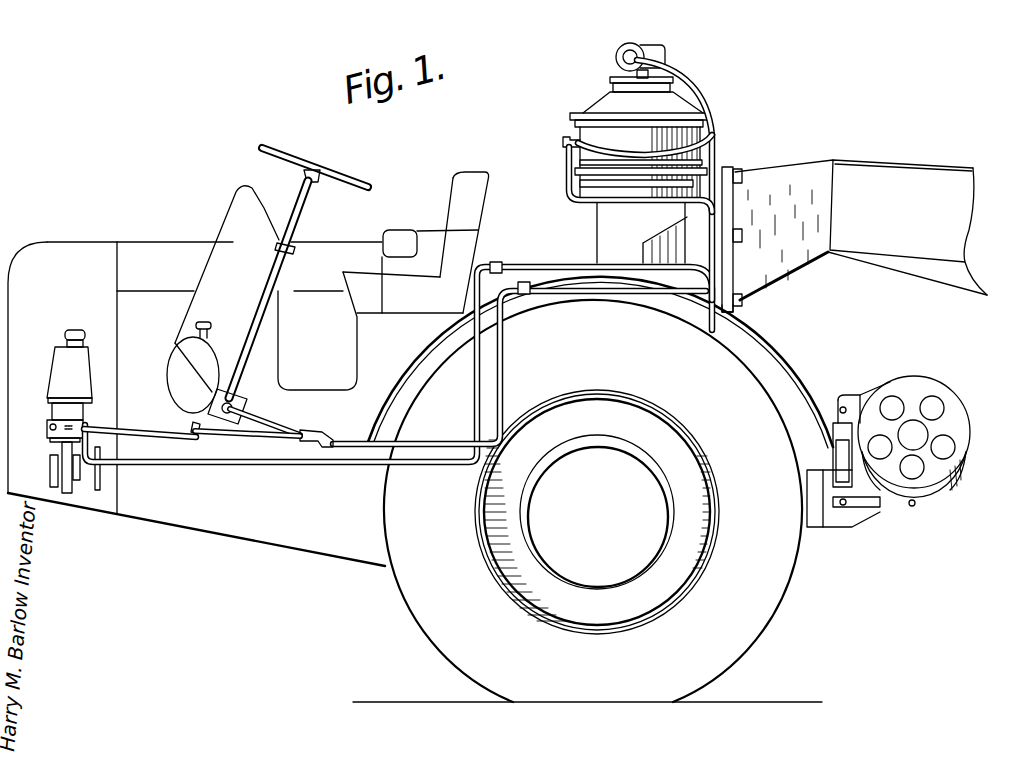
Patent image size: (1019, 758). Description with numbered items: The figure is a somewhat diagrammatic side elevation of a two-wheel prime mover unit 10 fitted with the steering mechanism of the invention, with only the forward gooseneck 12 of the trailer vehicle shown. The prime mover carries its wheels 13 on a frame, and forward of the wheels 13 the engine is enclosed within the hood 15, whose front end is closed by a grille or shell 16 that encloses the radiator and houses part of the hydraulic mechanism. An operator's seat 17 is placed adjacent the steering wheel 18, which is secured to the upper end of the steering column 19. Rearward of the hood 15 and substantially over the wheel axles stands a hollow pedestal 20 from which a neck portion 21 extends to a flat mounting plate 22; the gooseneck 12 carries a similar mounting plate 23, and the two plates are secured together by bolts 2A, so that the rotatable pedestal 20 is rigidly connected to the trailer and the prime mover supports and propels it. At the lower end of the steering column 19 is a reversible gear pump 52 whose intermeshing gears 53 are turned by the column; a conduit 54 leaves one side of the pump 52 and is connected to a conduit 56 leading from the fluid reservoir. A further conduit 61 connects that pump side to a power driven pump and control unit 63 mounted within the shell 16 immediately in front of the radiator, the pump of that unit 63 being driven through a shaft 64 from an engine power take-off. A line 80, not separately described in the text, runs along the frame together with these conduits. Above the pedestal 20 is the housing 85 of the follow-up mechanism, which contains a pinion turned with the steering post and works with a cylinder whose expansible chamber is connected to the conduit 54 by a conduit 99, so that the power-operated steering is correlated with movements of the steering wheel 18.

The two-wheel prime mover unit 10 is at (312, 589).
The gooseneck 12 is at (793, 168).
The wheels 13 is at (417, 597).
The hood 15 is at (140, 250).
The grille or shell 16 is at (38, 250).
The operator's seat 17 is at (472, 180).
The steering wheel 18 is at (288, 155).
The steering column 19 is at (298, 210).
The hollow pedestal 20 is at (600, 224).
The neck portion 21 is at (668, 232).
The flat mounting plate 22 is at (716, 280).
The mounting plate 23 is at (728, 222).
The bolts 2A is at (737, 168).
The reversible gear pump 52 is at (240, 405).
The intermeshing gears 53 is at (203, 360).
The conduit 54 is at (288, 422).
The conduit 56 is at (200, 435).
The conduit 61 is at (206, 447).
The power driven pump and control unit 63 is at (56, 367).
The shaft 64 is at (106, 473).
The hydraulic conduit 80 is at (282, 463).
The housing 85 is at (663, 54).
The conduit 99 is at (672, 92).